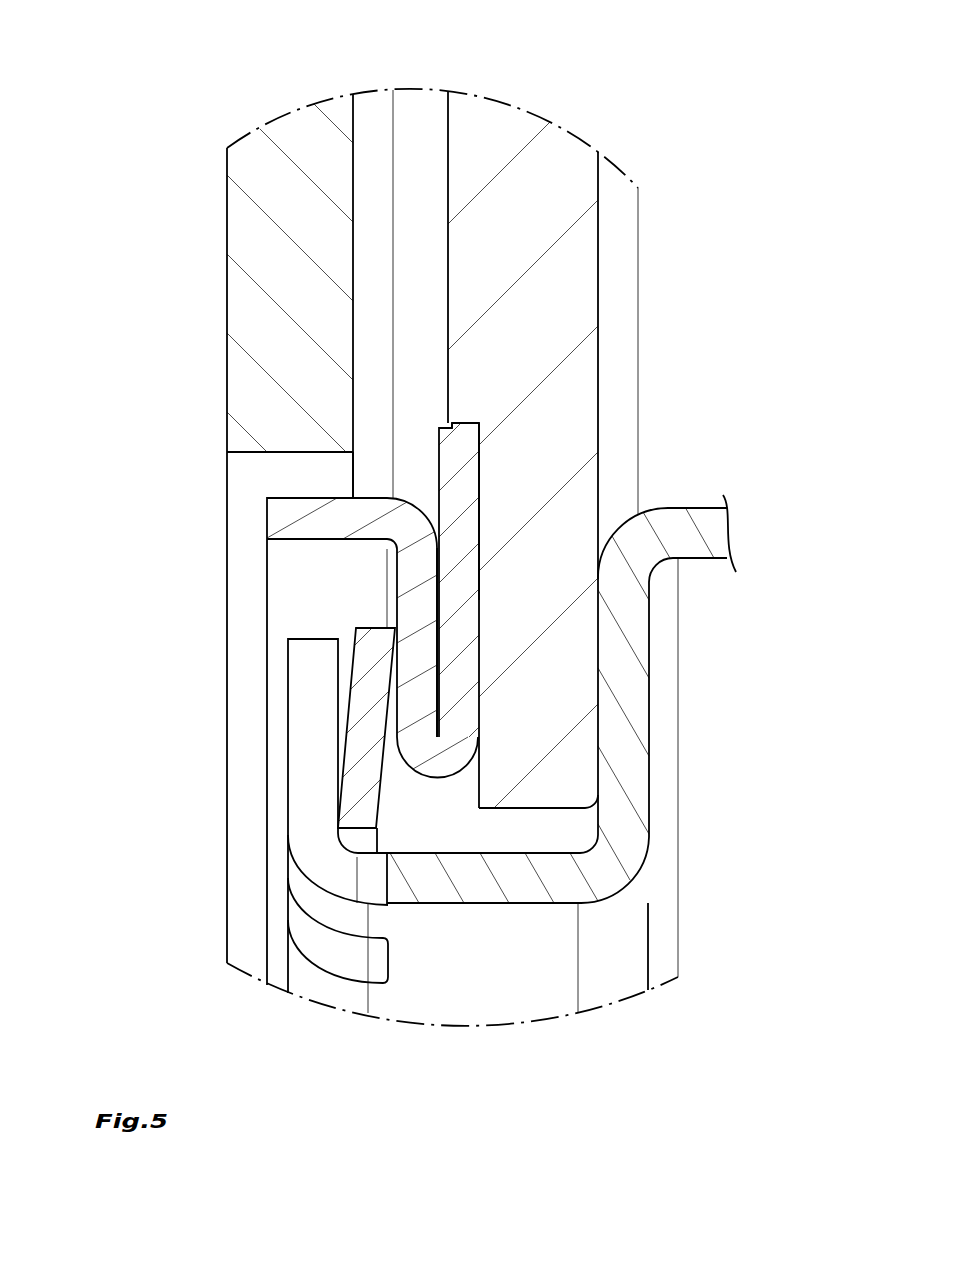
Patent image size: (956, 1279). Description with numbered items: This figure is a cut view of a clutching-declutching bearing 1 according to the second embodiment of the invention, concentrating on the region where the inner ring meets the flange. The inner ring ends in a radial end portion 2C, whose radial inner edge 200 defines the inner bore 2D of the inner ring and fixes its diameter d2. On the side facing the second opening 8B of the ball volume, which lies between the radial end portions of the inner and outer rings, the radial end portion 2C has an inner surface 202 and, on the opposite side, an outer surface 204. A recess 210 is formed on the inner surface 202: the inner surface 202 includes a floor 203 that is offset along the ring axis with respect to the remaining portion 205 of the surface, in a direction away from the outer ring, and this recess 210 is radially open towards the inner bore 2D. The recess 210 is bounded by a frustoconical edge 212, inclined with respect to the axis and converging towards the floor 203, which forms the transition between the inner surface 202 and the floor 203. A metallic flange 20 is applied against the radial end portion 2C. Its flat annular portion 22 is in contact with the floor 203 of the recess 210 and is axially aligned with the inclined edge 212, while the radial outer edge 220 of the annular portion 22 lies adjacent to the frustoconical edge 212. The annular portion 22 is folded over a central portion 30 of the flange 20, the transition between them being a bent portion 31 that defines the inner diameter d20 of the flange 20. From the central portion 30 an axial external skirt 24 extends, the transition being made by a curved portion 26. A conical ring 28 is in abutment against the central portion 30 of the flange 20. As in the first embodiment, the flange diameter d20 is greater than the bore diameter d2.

The bearing 1 is at (620, 150).
The radial end portion of the inner ring 2C is at (532, 272).
The inner bore of the inner ring 2D is at (412, 965).
The outer surface 204 is at (603, 405).
The second opening 8B is at (375, 377).
The inner surface 202 is at (84, 337).
The remaining portion of the inner surface 205 is at (447, 298).
The floor 203 is at (472, 454).
The recess 210 is at (447, 419).
The radial outer edge of the annular portion 220 is at (458, 422).
The frustoconical edge 212 is at (462, 418).
The flat annular portion 22 is at (460, 593).
The axial external skirt 24 is at (277, 516).
The curved portion 26 is at (402, 529).
The metallic flange 20 is at (377, 487).
The central portion 30 is at (412, 673).
The conical ring 28 is at (368, 710).
The bent portion 31 is at (427, 753).
The radial inner edge 200 is at (532, 812).
The inner diameter of the flange d20 is at (437, 778).
The diameter of the inner bore d2 is at (561, 808).